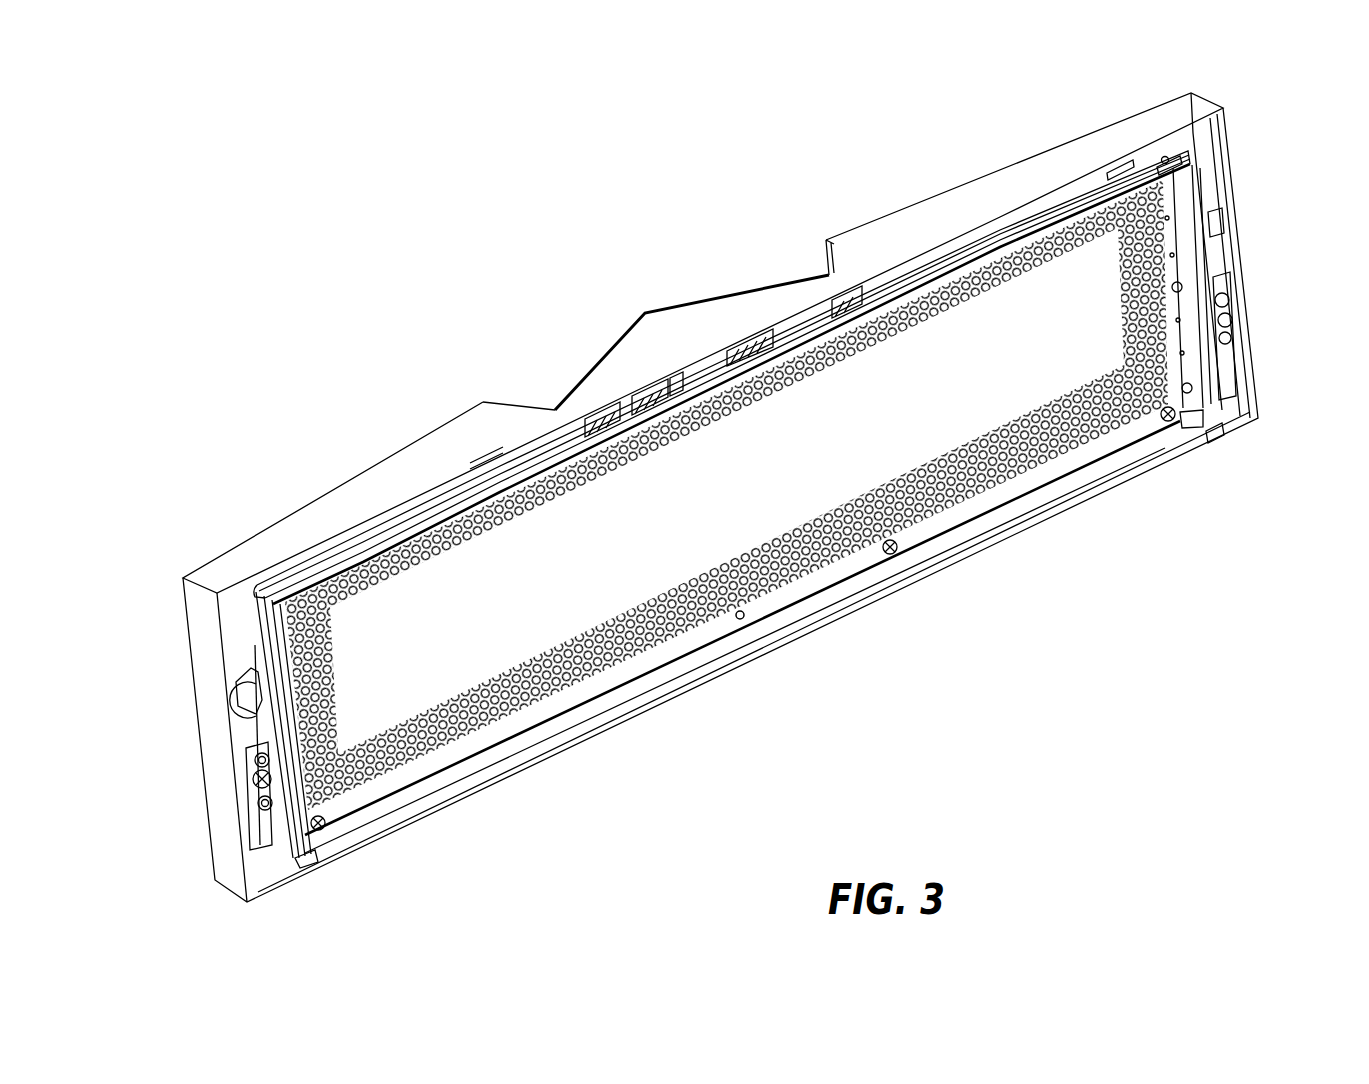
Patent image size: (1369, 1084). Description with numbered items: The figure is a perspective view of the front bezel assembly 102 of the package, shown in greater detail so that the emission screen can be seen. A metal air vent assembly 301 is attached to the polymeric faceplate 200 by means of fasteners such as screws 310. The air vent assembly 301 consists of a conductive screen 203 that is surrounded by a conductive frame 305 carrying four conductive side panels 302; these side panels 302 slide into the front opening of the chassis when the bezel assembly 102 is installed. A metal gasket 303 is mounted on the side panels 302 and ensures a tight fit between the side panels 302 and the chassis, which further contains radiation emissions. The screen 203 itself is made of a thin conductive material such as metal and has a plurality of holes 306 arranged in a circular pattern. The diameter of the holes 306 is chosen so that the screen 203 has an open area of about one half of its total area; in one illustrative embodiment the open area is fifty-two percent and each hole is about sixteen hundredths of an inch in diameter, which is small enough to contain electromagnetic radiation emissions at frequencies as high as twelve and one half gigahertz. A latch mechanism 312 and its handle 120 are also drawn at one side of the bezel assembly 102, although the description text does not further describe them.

The bezel assembly 102 is at (635, 218).
The latch handle 120 is at (252, 702).
The polymeric faceplate 200 is at (483, 398).
The conductive screen 203 is at (560, 692).
The air vent assembly 301 is at (393, 799).
The conductive side panels 302 is at (872, 295).
The metal gasket 303 is at (348, 552).
The conductive frame 305 is at (1190, 357).
The holes 306 is at (985, 493).
The screws 310 is at (1170, 416).
The latch 312 is at (248, 657).